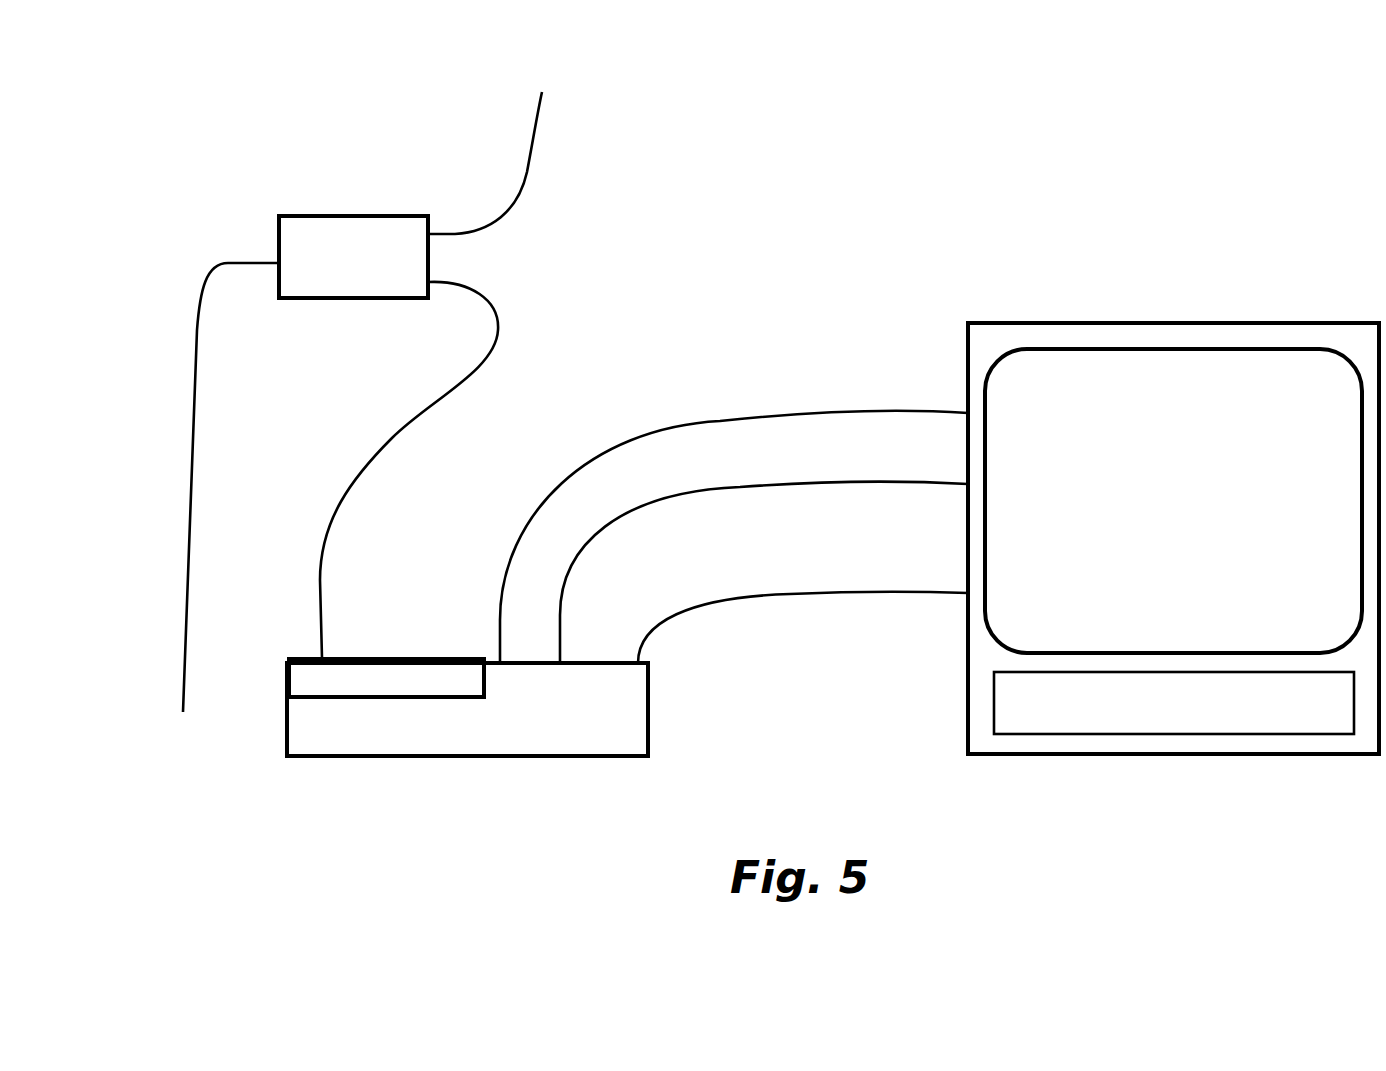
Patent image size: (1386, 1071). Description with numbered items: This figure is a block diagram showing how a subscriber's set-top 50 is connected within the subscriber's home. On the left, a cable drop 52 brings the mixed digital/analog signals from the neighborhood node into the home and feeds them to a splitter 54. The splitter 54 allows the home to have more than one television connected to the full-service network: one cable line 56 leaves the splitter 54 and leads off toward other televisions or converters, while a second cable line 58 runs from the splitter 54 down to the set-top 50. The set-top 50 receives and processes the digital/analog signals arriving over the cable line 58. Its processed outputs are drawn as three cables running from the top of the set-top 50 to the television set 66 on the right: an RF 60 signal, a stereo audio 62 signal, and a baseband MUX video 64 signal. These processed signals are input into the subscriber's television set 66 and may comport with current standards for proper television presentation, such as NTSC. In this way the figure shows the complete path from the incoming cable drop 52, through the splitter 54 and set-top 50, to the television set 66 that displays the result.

The set-top 50 is at (410, 757).
The cable drop 52 is at (182, 687).
The splitter 54 is at (334, 215).
The cable line 56 is at (532, 132).
The cable line 58 is at (409, 432).
The RF 60 is at (760, 415).
The stereo audio 62 is at (730, 494).
The baseband MUX video 64 is at (765, 598).
The television set 66 is at (1098, 322).